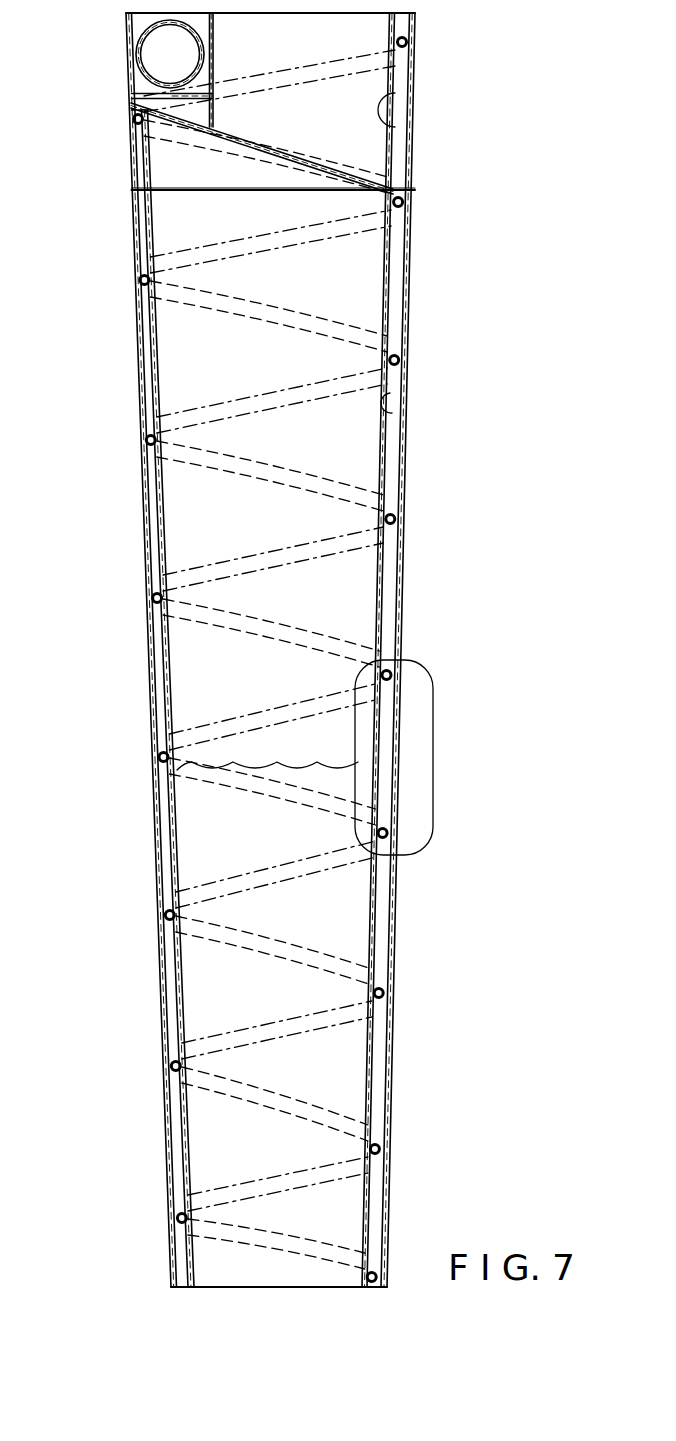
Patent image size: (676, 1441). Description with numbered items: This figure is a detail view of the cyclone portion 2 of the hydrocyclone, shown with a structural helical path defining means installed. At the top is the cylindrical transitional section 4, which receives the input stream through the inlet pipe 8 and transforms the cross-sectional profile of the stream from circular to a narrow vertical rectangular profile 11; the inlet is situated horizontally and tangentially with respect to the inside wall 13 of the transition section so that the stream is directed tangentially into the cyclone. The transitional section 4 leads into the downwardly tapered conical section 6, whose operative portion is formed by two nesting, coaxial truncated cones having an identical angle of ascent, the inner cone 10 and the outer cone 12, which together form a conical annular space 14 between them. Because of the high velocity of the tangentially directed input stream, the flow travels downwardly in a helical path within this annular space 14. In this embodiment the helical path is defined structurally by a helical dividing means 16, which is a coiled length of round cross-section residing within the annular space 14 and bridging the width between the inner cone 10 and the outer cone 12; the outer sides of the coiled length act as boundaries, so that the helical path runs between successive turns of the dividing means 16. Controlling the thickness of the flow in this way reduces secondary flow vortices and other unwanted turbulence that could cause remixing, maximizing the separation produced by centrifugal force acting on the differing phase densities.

The cyclone portion 2 is at (437, 195).
The transitional section 4 is at (100, 13).
The conical section 6 is at (106, 1297).
The inlet pipe 8 is at (147, 25).
The inner cone 10 is at (405, 388).
The narrow vertical rectangular profile 11 is at (131, 187).
The outer cone 12 is at (413, 401).
The inside wall 13 is at (397, 128).
The conical annular space 14 is at (397, 444).
The helical dividing means 16 is at (362, 560).